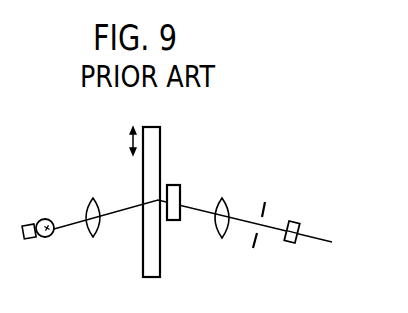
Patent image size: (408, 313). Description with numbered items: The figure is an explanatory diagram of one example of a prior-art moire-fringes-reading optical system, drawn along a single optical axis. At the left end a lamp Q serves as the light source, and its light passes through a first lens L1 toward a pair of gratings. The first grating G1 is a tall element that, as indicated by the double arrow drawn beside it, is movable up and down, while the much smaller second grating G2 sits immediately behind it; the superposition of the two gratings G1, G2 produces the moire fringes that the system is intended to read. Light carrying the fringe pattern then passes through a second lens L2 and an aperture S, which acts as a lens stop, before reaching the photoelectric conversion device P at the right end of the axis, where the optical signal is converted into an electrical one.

The lamp Q is at (38, 219).
The lens L1 is at (88, 206).
The grating G1 is at (147, 187).
The grating G2 is at (178, 188).
The lens L2 is at (231, 207).
The aperture (lens stop) S is at (263, 212).
The photoelectric conversion device P is at (293, 221).